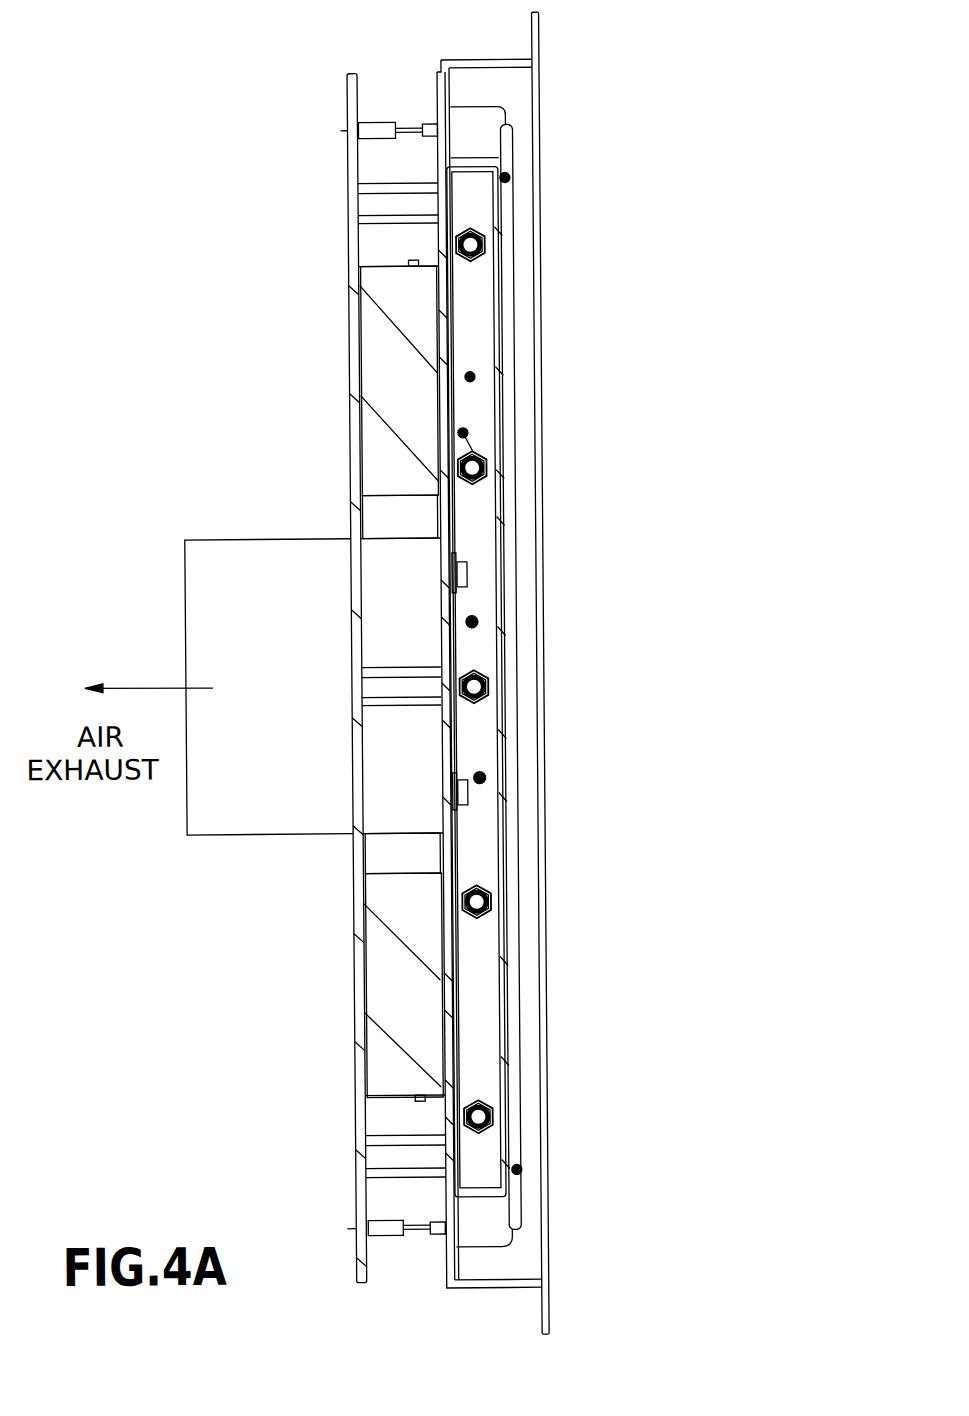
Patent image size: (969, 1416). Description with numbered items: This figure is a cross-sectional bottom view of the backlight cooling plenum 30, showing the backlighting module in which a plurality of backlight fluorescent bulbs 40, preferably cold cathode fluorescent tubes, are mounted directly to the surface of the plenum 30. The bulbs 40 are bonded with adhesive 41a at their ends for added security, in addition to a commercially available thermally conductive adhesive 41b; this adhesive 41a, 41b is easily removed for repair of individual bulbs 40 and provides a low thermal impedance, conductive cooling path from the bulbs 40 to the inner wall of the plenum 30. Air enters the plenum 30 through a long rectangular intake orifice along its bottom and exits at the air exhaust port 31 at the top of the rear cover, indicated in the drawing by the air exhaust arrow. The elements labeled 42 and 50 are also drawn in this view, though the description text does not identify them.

The backlight cooling plenum 30 is at (468, 377).
The air exhaust port 31 is at (239, 560).
The backlight fluorescent bulbs 40 is at (505, 158).
The adhesive 41a is at (504, 178).
The thermally conductive adhesive 41b is at (496, 253).
The fastening nuts 42 is at (474, 778).
The mounting plate 50 is at (432, 95).